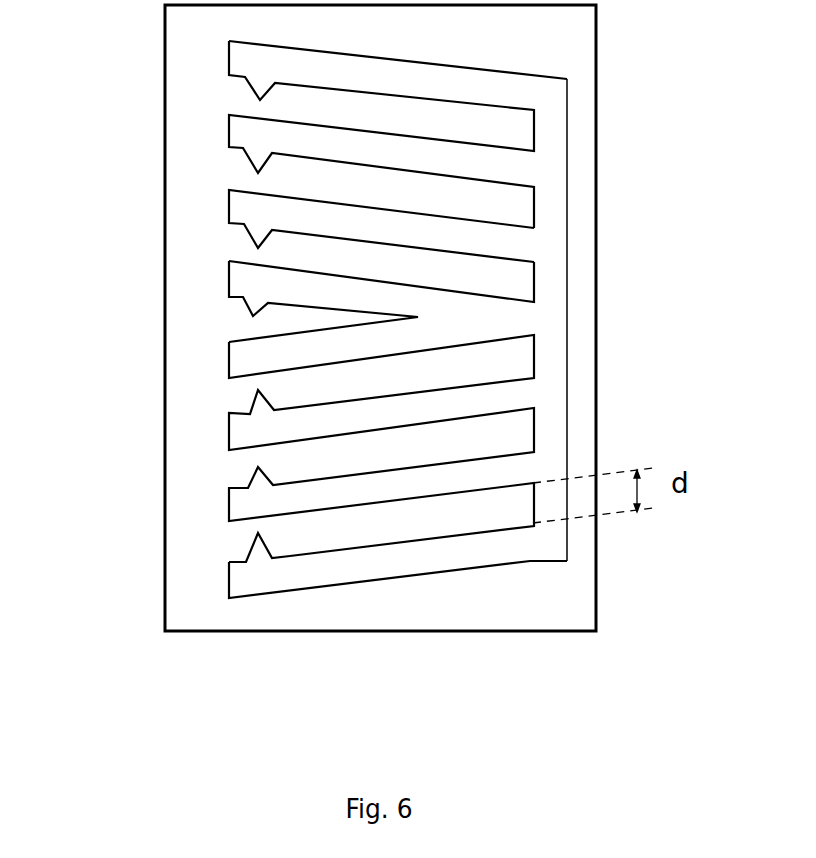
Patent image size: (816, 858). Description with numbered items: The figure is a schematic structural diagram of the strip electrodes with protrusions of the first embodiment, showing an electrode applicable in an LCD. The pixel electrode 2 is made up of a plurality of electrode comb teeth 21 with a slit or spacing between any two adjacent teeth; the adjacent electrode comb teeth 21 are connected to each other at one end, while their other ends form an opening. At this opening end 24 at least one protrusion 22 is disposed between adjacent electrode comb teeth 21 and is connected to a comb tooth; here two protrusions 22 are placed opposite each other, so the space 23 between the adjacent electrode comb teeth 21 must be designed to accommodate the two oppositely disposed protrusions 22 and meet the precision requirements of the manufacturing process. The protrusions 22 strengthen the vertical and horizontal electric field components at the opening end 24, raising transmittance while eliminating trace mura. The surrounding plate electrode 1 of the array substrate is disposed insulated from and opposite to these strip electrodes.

The plate electrode 1 is at (535, 622).
The pixel electrode 2 is at (548, 273).
The electrode comb teeth 21 is at (406, 560).
The protrusion 22 is at (260, 547).
The space 23 is at (300, 387).
The opening end 24 is at (235, 207).